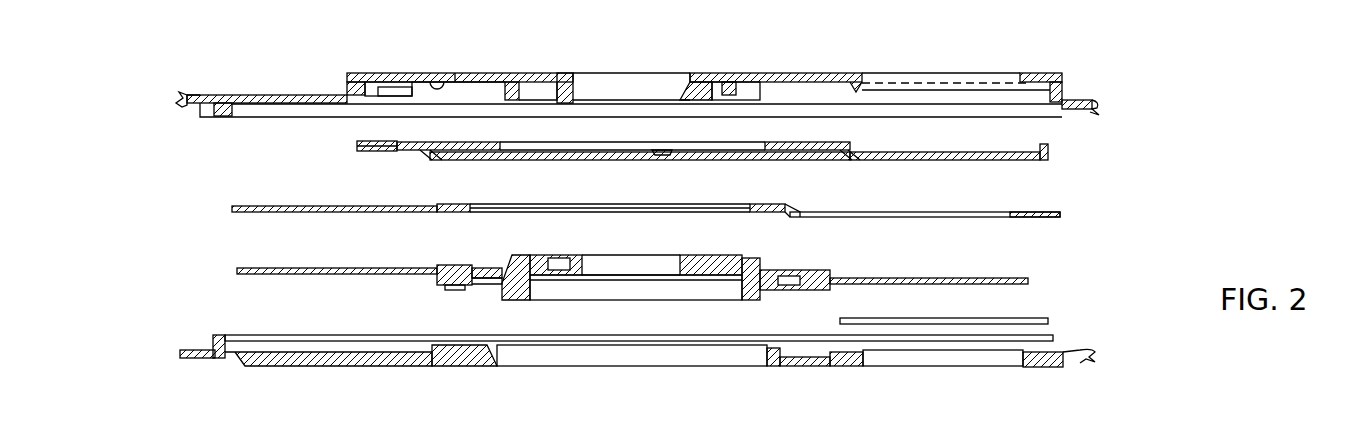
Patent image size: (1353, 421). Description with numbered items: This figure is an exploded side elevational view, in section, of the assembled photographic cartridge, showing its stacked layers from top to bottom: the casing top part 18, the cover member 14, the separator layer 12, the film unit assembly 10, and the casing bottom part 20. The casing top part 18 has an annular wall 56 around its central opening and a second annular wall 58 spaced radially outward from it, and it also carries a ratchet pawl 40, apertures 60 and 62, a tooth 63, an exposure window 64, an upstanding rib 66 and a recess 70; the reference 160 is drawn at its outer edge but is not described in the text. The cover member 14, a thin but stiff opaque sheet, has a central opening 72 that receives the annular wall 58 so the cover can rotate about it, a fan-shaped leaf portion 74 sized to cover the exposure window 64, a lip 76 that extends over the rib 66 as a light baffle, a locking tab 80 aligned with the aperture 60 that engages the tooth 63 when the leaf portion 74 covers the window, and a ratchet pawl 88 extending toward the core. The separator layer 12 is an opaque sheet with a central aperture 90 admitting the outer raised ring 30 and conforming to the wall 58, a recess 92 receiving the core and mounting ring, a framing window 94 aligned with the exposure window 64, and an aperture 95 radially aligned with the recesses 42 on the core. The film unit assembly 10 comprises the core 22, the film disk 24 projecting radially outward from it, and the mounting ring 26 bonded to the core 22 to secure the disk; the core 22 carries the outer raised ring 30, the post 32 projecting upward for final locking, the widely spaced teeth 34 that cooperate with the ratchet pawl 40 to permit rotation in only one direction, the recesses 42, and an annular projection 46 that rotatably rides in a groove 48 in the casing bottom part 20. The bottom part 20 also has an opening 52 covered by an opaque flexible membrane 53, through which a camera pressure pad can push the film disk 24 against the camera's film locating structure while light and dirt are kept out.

The film unit assembly 10 is at (230, 290).
The separator layer 12 is at (238, 202).
The cover member 14 is at (1098, 185).
The casing top part 18 is at (292, 94).
The casing bottom part 20 is at (248, 366).
The core 22 is at (743, 258).
The film disk 24 is at (265, 267).
The mounting ring 26 is at (818, 272).
The outer raised ring 30 is at (512, 258).
The post 32 is at (553, 262).
The widely spaced teeth 34 is at (621, 383).
The ratchet pawl 40 is at (729, 82).
The recesses 42 is at (478, 265).
The annular projection 46 is at (452, 284).
The groove 48 is at (446, 345).
The opening 52 is at (970, 362).
The opaque flexible membrane 53 is at (1045, 318).
The annular wall 56 is at (642, 93).
The second annular wall 58 is at (500, 82).
The aperture 60 is at (393, 75).
The aperture 62 is at (457, 75).
The tooth 63 is at (379, 89).
The exposure window 64 is at (951, 82).
The upstanding rib 66 is at (1021, 93).
The recess 70 is at (445, 77).
The central opening 72 is at (587, 148).
The leaf portion 74 is at (975, 152).
The lip 76 is at (1047, 147).
The tab 80 is at (348, 147).
The ratchet pawl 88 is at (656, 160).
The central aperture 90 is at (662, 203).
The recess 92 is at (470, 216).
The framing window 94 is at (929, 212).
The aperture 95 is at (804, 205).
The edge 160 is at (187, 96).